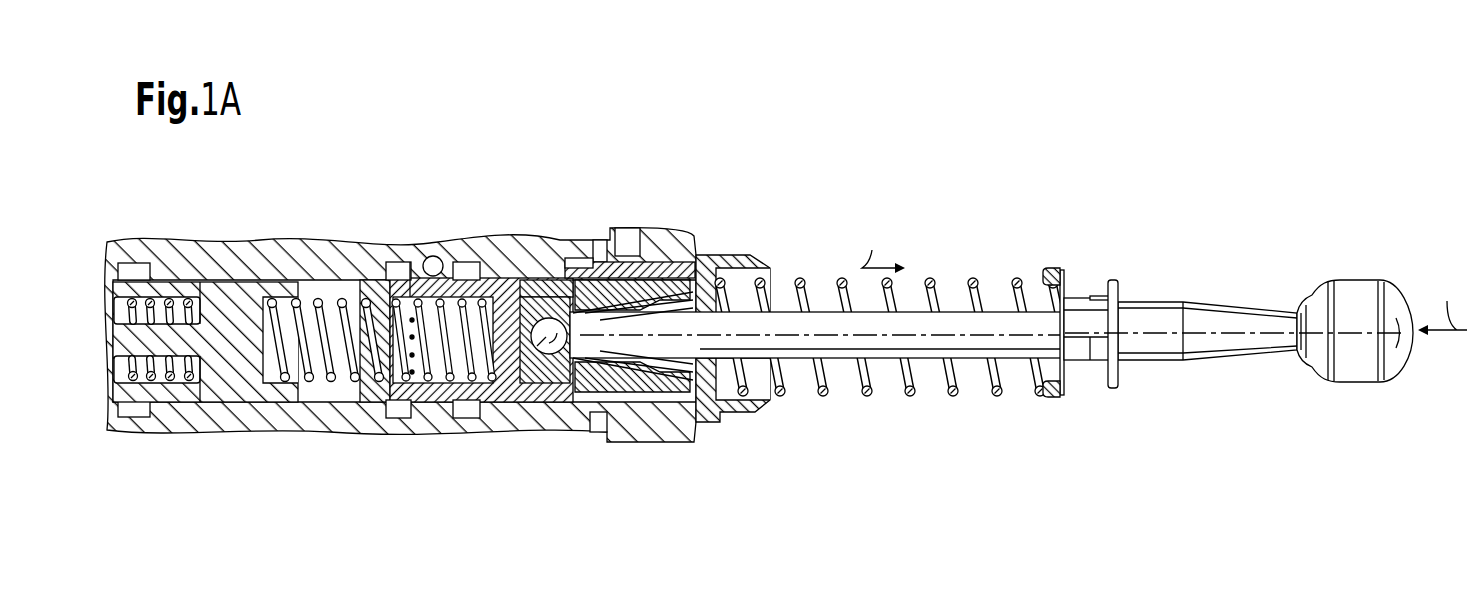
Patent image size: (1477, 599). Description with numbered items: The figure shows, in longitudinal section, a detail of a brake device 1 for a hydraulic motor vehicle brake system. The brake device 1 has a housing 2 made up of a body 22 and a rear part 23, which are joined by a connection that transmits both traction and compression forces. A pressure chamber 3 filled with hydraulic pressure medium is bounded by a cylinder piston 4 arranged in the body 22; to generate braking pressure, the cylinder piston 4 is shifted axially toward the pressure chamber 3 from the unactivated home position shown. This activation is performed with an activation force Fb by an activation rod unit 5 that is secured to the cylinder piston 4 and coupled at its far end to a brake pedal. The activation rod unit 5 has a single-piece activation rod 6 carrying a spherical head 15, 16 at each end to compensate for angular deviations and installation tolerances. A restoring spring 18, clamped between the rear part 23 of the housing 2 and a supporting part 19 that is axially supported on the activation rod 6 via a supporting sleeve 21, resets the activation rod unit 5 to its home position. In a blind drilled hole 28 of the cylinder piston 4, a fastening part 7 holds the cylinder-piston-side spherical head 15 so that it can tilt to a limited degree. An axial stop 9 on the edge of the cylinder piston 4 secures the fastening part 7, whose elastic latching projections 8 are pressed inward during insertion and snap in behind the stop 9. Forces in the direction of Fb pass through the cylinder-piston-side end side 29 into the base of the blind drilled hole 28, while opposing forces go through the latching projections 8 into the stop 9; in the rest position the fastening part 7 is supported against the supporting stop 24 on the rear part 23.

The brake device 1 is at (766, 115).
The housing 2 is at (386, 234).
The pressure chamber 3 is at (323, 392).
The cylinder piston 4 is at (548, 262).
The activation rod unit 5 is at (1133, 284).
The activation rod 6 is at (1012, 342).
The fastening part 7 is at (537, 386).
The latching projections 8 is at (645, 292).
The axial stop 9 is at (660, 285).
The spherical head 15 is at (505, 386).
The spherical head 16 is at (1353, 312).
The restoring spring 18 is at (933, 277).
The supporting part 19 is at (1046, 266).
The supporting sleeve 21 is at (1090, 317).
The body 22 is at (540, 282).
The rear part 23 is at (612, 262).
The supporting stop 24 is at (704, 278).
The blind drilled hole 28 is at (500, 282).
The cylinder-piston-side end side 29 is at (445, 256).